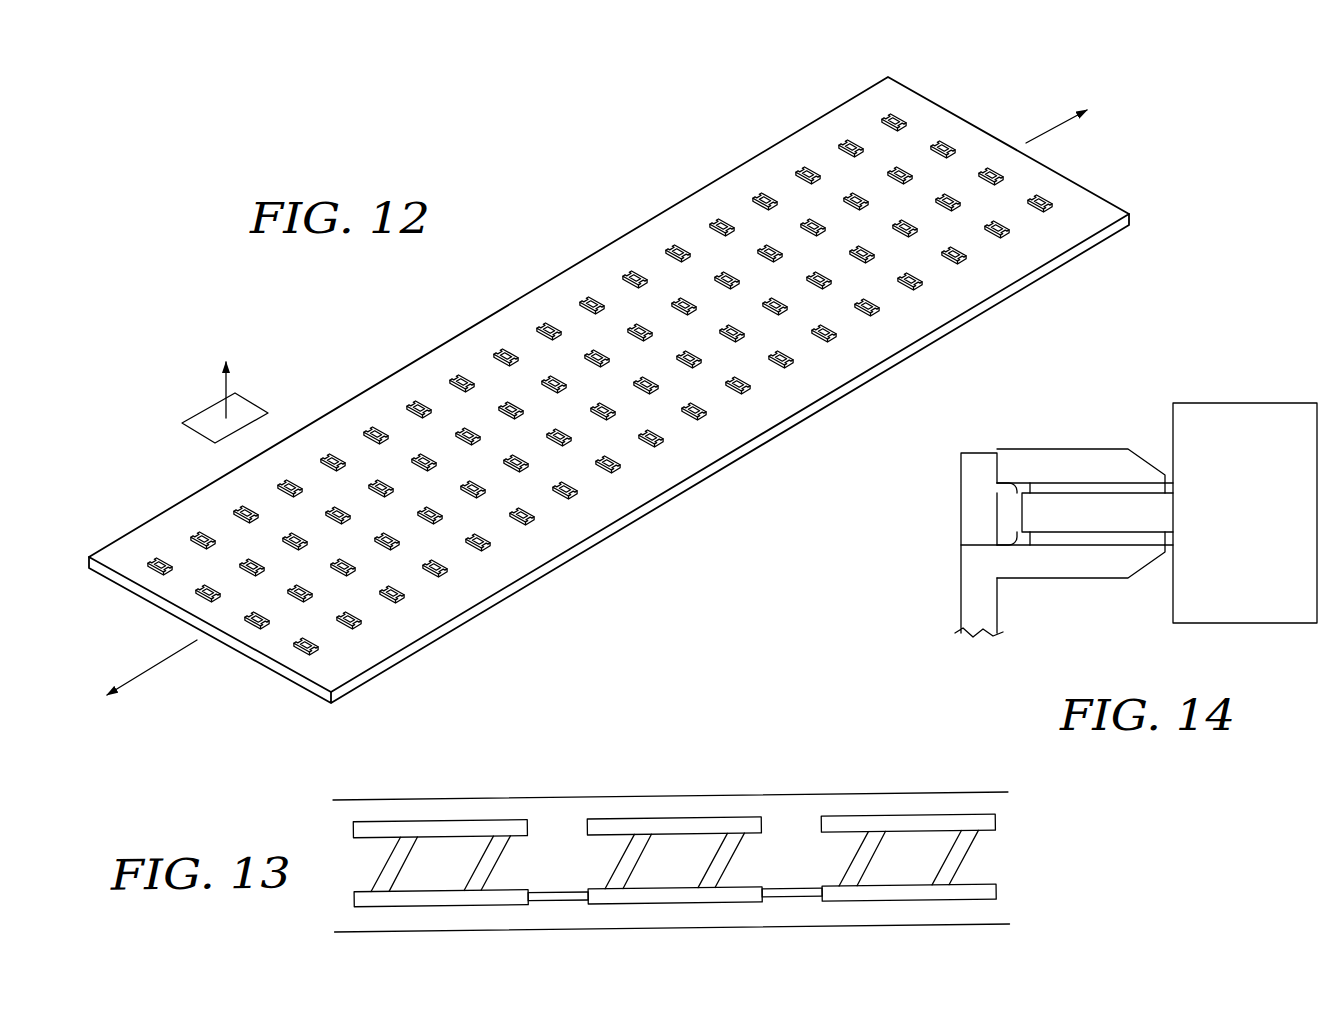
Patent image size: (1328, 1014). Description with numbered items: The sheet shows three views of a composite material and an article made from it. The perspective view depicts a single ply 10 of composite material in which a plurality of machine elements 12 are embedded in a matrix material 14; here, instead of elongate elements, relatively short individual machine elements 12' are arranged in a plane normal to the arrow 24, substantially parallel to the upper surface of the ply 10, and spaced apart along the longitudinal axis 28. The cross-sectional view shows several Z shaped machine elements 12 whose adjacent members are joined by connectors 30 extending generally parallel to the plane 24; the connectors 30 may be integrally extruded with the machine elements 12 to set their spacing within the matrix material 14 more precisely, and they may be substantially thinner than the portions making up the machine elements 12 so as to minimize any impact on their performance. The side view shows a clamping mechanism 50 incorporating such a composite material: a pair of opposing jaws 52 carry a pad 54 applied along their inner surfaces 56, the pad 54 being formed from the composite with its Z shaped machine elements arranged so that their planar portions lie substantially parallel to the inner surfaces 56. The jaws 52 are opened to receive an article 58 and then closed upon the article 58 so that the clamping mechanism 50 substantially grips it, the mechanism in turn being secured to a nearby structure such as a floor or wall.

In FIG. 12, the single ply 10 is at (574, 212).
In FIG. 13, the machine elements 12 is at (674, 823).
In FIG. 12, the short individual machine elements 12' is at (639, 501).
In FIG. 12, the matrix material 14 is at (615, 534).
In FIG. 13, the matrix material 14 is at (838, 803).
In FIG. 12, the arrow / plane 24 is at (225, 390).
In FIG. 12, the longitudinal axis 28 is at (1045, 134).
In FIG. 13, the connectors 30 is at (553, 906).
In FIG. 14, the clamping mechanism 50 is at (938, 522).
In FIG. 14, the jaws 52 is at (1048, 460).
In FIG. 14, the pad 54 is at (1115, 488).
In FIG. 14, the inner surfaces 56 is at (998, 483).
In FIG. 14, the article 58 is at (1264, 524).